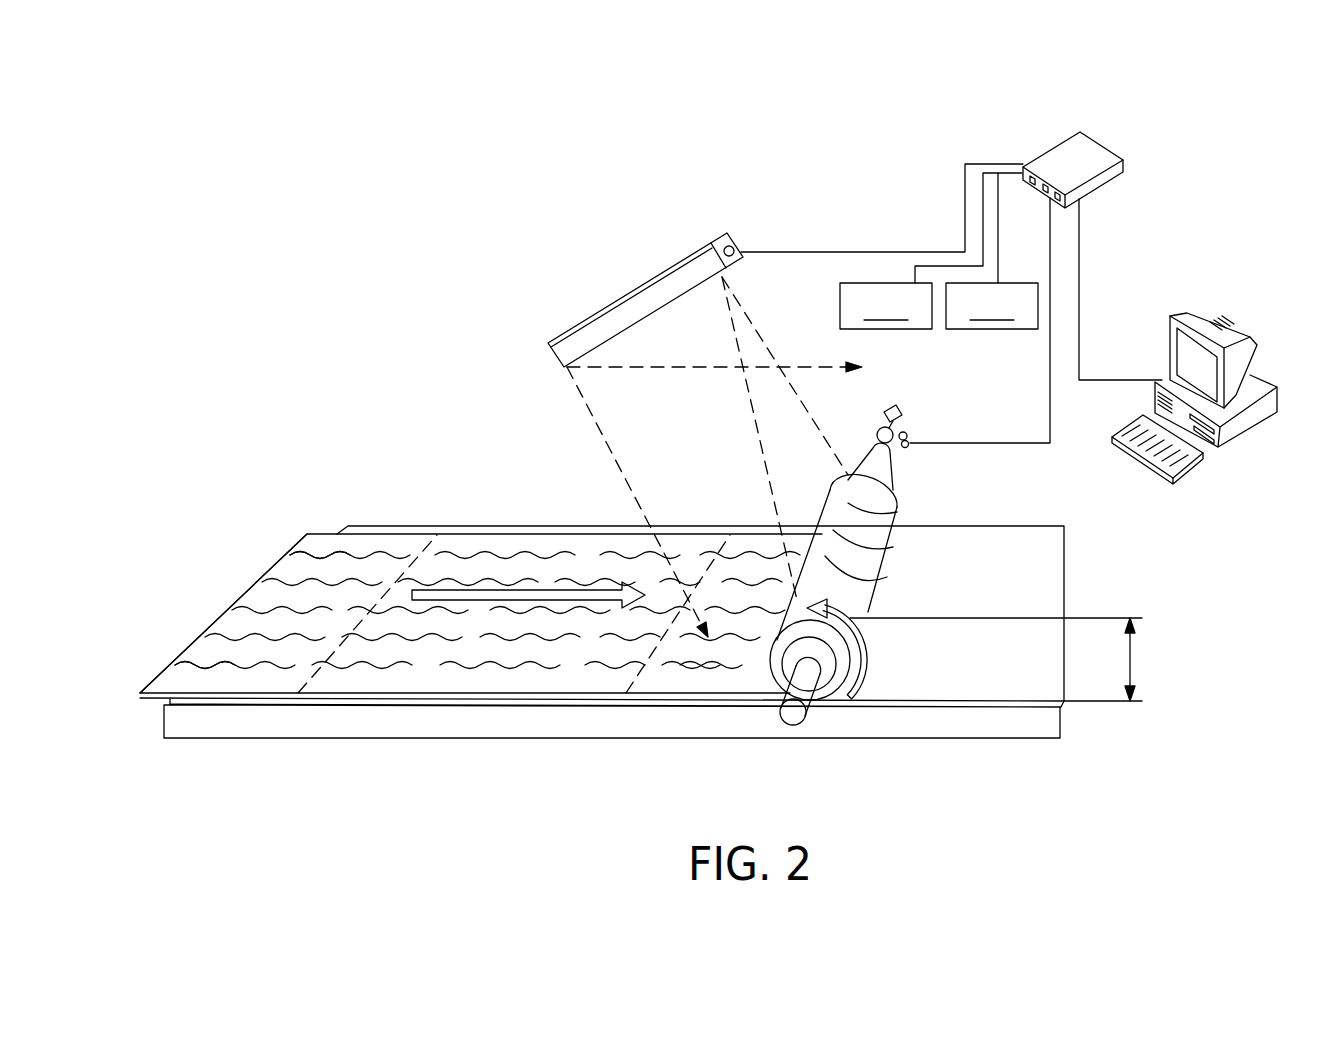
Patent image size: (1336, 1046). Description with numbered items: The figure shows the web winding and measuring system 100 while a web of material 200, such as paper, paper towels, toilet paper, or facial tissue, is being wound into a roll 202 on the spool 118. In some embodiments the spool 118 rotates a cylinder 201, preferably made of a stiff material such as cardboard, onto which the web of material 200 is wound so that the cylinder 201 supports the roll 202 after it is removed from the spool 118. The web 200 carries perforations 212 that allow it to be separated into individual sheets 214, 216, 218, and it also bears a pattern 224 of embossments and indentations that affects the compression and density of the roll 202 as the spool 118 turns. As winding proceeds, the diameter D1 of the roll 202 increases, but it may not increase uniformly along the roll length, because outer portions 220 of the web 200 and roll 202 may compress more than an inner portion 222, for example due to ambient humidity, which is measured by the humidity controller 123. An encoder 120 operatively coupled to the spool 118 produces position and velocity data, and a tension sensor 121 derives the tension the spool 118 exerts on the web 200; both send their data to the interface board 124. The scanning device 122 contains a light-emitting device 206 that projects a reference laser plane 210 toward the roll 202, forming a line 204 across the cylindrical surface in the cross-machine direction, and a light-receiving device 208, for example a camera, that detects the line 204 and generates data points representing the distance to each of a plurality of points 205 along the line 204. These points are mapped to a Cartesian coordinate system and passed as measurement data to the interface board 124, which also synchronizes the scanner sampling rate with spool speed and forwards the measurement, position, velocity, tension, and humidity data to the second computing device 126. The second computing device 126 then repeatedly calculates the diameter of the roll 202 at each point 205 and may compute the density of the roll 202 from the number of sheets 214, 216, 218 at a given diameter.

The web winding and measuring system 100 is at (268, 185).
The spool 118 is at (795, 723).
The encoder 120 is at (906, 421).
The tension sensor 121 is at (931, 251).
The scanning device 122 is at (690, 262).
The humidity controller 123 is at (992, 251).
The interface board 124 is at (1060, 143).
The second computing device 126 is at (1225, 322).
The web of material 200 is at (365, 548).
The cylinder 201 is at (815, 697).
The roll 202 is at (897, 502).
The line 204 is at (893, 547).
The points 205 is at (897, 512).
The light-emitting device 206 is at (738, 280).
The light-receiving device 208 is at (572, 370).
The reference laser plane 210 is at (818, 412).
The perforations 212 is at (310, 683).
The sheet 214 is at (243, 686).
The sheet 216 is at (485, 553).
The sheet 218 is at (690, 668).
The outer portions 220 is at (300, 536).
The inner portion 222 is at (233, 603).
The pattern 224 is at (400, 525).
The diameter D1 is at (1130, 657).